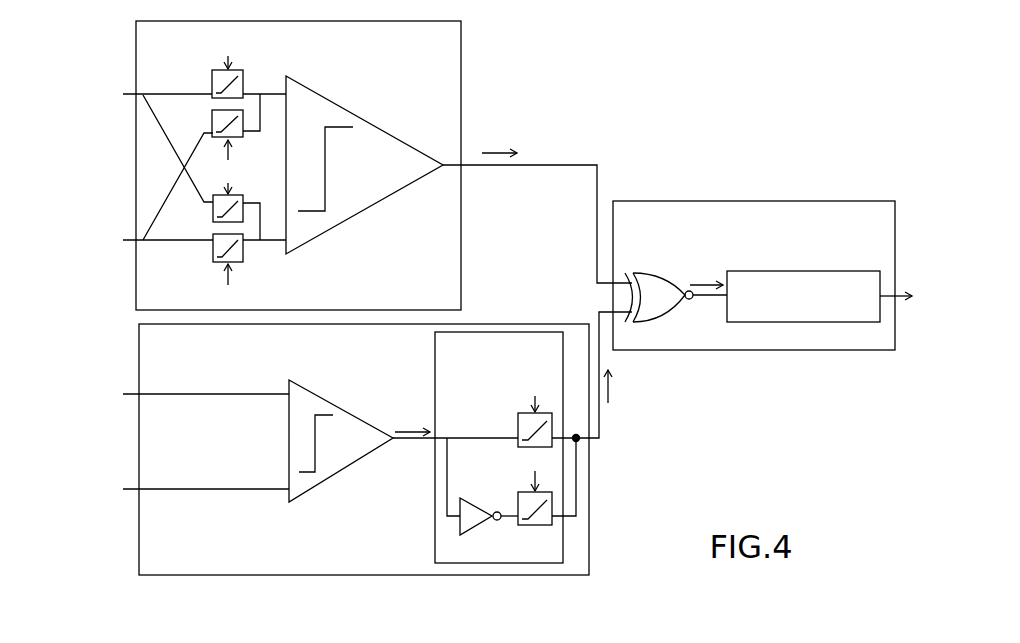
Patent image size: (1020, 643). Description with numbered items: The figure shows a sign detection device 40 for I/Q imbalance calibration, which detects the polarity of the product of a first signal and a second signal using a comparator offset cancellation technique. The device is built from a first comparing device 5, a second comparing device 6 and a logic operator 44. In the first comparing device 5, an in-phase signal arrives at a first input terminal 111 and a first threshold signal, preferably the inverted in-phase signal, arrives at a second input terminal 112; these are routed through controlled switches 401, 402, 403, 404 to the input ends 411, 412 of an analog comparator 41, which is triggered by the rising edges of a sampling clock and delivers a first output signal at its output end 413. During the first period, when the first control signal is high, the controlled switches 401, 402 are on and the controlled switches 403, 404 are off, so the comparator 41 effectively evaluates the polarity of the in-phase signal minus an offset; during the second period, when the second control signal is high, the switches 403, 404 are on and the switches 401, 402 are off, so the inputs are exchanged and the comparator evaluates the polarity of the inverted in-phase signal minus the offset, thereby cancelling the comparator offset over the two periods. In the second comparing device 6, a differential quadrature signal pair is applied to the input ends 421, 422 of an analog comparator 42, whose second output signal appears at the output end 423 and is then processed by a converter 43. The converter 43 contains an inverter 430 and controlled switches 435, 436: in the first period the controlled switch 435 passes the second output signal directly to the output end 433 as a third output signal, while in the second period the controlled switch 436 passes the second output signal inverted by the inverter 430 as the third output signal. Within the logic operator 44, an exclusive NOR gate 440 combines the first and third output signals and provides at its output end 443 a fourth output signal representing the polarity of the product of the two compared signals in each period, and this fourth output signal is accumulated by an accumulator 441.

The sign detection device 40 is at (624, 64).
The first comparing device 5 is at (450, 102).
The second comparing device 6 is at (150, 552).
The first input terminal 111 is at (136, 94).
The second input terminal 112 is at (136, 240).
The controlled switch 401 is at (213, 74).
The controlled switch 402 is at (213, 258).
The controlled switch 403 is at (213, 117).
The controlled switch 404 is at (234, 199).
The input end 411 is at (265, 92).
The input end 412 is at (267, 243).
The analog comparator 41 is at (387, 148).
The output end 413 is at (555, 165).
The logic operator 44 is at (840, 207).
The exclusive NOR gate 440 is at (647, 282).
The accumulator 441 is at (817, 275).
The output end 443 is at (695, 302).
The converter 43 is at (503, 343).
The output end 433 is at (600, 425).
The controlled switch 435 is at (528, 420).
The controlled switch 436 is at (528, 498).
The inverter 430 is at (470, 518).
The input end 421 is at (205, 392).
The input end 422 is at (210, 492).
The analog comparator 42 is at (310, 400).
The output end 423 is at (412, 442).